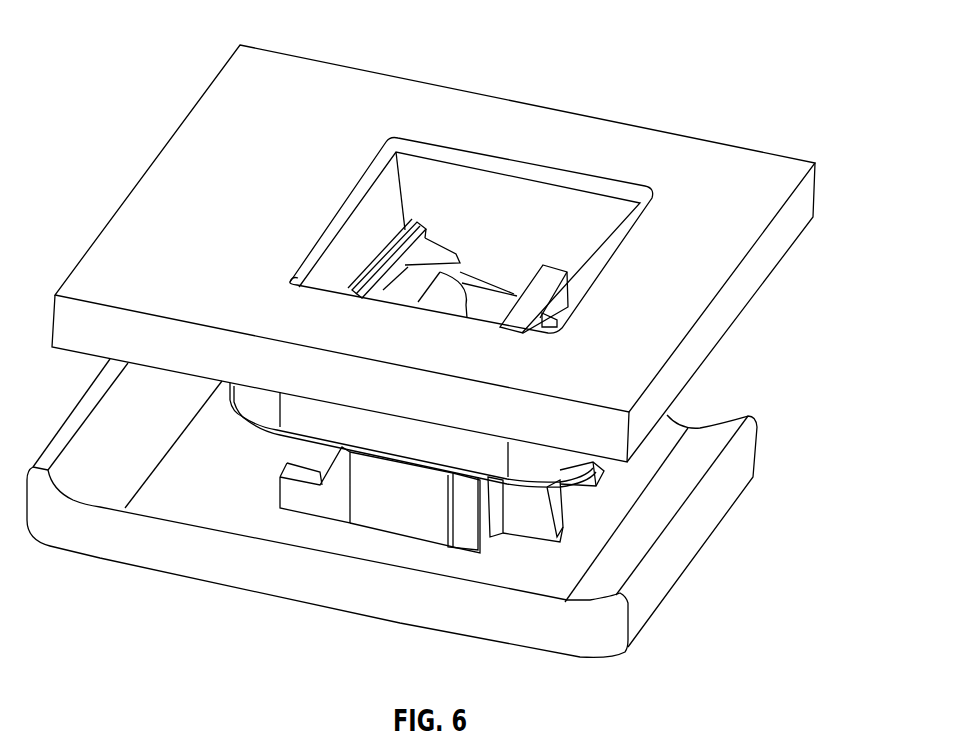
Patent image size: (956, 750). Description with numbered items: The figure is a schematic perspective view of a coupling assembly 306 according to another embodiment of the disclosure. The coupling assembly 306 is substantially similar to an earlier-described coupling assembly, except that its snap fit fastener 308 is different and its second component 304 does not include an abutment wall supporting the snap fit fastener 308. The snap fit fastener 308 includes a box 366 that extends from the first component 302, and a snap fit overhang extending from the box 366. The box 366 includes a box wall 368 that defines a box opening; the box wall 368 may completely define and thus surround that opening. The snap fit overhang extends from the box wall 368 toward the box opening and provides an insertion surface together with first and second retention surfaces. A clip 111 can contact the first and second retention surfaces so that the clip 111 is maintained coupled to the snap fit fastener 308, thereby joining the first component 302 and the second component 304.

The first component 302 is at (343, 82).
The second component 304 is at (318, 595).
The coupling assembly 306 is at (770, 355).
The snap fit fastener 308 is at (438, 255).
The clip 111 is at (408, 283).
The box 366 is at (263, 413).
The box wall 368 is at (597, 480).